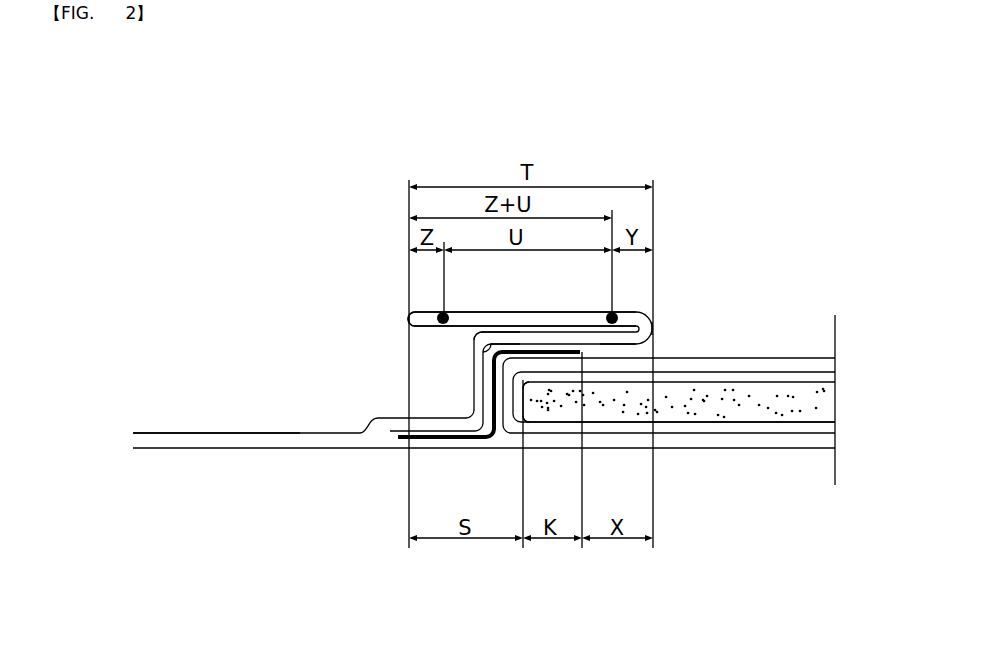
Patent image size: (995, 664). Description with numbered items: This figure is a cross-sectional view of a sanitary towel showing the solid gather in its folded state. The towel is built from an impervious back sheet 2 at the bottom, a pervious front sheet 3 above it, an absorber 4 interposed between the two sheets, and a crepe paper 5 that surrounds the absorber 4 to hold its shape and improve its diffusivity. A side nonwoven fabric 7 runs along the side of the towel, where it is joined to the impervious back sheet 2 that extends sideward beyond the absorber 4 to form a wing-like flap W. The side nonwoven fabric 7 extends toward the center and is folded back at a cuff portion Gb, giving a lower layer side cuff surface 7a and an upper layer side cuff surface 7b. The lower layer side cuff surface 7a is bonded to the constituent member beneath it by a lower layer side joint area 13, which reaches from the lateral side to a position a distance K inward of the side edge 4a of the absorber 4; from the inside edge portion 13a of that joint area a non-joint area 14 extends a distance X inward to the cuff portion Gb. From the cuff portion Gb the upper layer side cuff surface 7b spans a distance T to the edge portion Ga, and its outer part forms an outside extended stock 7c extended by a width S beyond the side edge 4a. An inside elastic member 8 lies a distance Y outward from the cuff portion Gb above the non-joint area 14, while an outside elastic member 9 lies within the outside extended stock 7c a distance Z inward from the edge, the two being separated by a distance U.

The impervious back sheet 2 is at (340, 450).
The pervious front sheet 3 is at (797, 358).
The absorber 4 is at (750, 408).
The side edge of the absorber 4a is at (522, 408).
The crepe paper 5 is at (820, 372).
The side nonwoven fabric 7 is at (318, 433).
The lower layer side cuff surface 7a is at (510, 337).
The upper layer side cuff surface 7b is at (543, 317).
The outside extended stock 7c is at (457, 317).
The inside elastic member 8 is at (618, 313).
The outside elastic member 9 is at (437, 313).
The lower layer side joint area 13 is at (418, 444).
The inside edge portion of the lower layer side joint area 13a is at (590, 356).
The non-joint area 14 is at (625, 348).
The wing-like flap W is at (201, 433).
The edge portion Ga is at (407, 318).
The cuff portion Gb is at (655, 328).